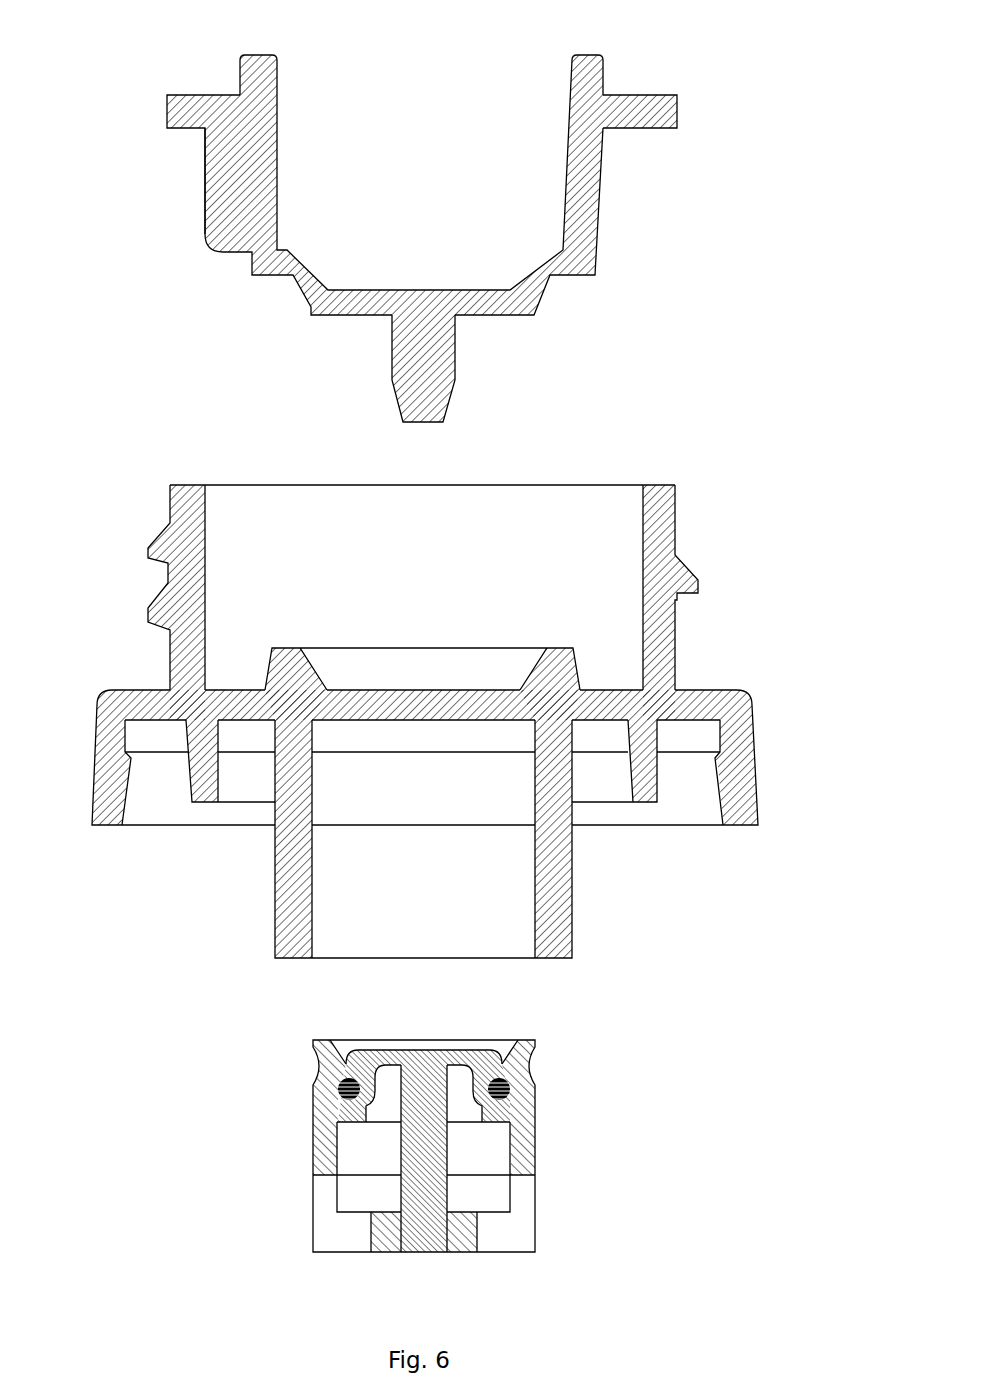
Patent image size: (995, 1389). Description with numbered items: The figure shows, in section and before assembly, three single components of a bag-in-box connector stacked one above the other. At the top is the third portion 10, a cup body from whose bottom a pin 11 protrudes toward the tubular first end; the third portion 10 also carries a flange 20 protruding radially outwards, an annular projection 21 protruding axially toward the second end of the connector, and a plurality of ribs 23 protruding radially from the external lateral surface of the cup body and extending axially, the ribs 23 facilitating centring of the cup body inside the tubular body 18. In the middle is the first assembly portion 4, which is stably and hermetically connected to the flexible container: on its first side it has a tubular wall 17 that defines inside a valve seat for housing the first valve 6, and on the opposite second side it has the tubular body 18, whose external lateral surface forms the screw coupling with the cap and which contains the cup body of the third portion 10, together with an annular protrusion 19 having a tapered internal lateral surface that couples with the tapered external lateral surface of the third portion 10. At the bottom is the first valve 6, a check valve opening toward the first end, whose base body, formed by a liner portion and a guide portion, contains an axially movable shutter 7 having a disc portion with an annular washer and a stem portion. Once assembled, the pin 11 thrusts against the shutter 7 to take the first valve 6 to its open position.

The first assembly portion 4 is at (743, 733).
The first valve 6 is at (317, 1138).
The shutter 7 is at (430, 1130).
The third portion 10 is at (422, 211).
The pin 11 is at (442, 377).
The tubular wall 17 is at (558, 882).
The tubular body 18 is at (665, 527).
The annular protrusion 19 is at (287, 658).
The flange 20 is at (653, 103).
The annular projection 21 is at (250, 68).
The ribs 23 is at (215, 157).